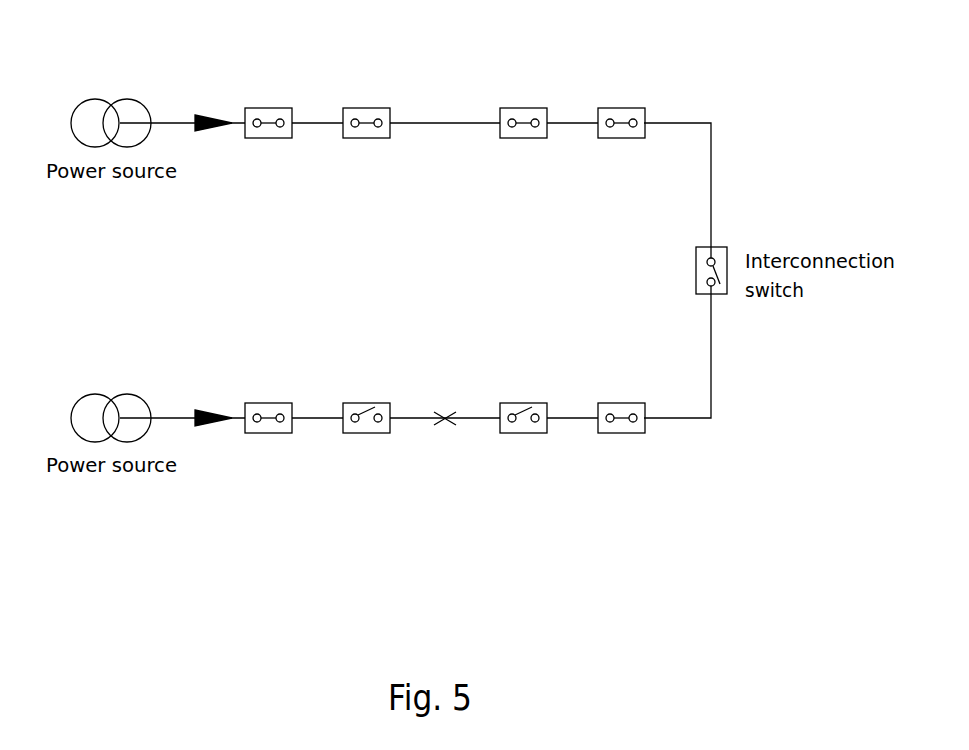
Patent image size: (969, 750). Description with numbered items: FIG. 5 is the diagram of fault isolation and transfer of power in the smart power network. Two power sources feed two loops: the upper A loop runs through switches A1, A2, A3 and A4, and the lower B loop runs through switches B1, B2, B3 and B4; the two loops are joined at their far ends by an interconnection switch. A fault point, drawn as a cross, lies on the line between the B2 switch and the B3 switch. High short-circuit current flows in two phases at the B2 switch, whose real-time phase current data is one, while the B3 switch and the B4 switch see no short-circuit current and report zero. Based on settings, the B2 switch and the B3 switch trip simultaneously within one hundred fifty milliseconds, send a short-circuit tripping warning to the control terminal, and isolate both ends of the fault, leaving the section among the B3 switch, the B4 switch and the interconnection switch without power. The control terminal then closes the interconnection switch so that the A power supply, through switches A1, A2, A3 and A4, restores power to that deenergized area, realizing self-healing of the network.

The A1 switch A1 is at (268, 105).
The A2 switch A2 is at (366, 105).
The A3 switch A3 is at (523, 105).
The A4 switch A4 is at (621, 105).
The B1 switch B1 is at (268, 400).
The B2 switch B2 is at (366, 400).
The B3 switch B3 is at (523, 400).
The B4 switch B4 is at (621, 400).